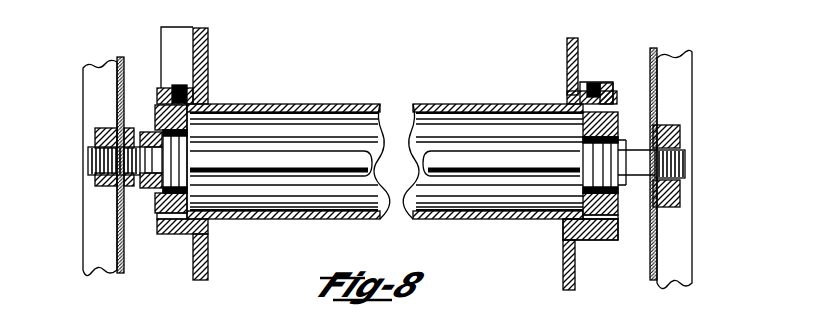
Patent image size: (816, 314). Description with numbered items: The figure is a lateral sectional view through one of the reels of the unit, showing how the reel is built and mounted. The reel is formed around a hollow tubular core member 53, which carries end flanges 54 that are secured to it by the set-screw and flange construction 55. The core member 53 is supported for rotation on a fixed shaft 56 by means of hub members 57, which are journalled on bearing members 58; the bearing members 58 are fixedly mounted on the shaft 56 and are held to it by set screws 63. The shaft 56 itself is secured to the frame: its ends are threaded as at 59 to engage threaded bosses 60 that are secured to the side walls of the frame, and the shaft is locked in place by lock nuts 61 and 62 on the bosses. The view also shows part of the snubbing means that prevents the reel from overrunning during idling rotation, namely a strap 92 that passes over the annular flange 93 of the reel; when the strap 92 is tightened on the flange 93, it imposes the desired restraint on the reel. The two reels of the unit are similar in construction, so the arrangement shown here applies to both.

The hollow tubular core member 53 is at (295, 219).
The end flange 54 is at (208, 60).
The set-screw and flange construction 55 is at (177, 85).
The fixed shaft 56 is at (308, 153).
The hub member 57 is at (157, 192).
The bearing member 58 is at (163, 214).
The threaded end 59 is at (88, 158).
The threaded boss 60 is at (110, 130).
The lock nut 61 is at (100, 132).
The lock nut 62 is at (115, 198).
The set screw 63 is at (147, 132).
The strap 92 is at (590, 83).
The annular flange 93 is at (563, 232).